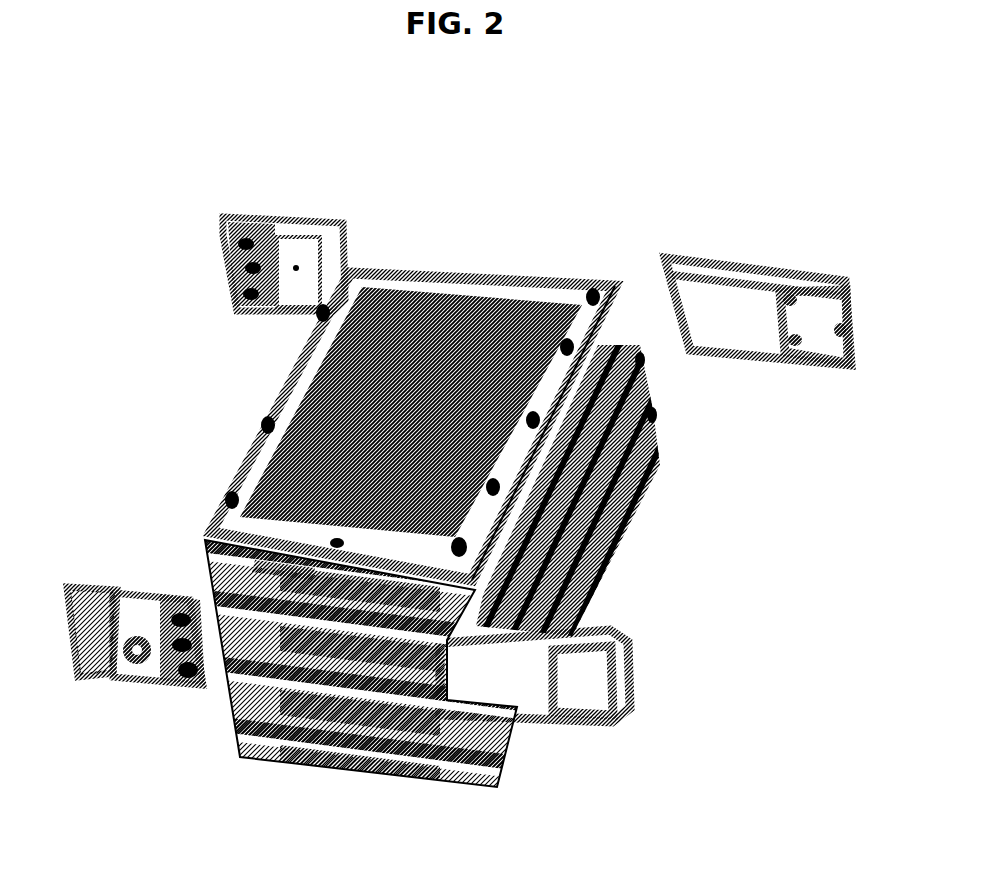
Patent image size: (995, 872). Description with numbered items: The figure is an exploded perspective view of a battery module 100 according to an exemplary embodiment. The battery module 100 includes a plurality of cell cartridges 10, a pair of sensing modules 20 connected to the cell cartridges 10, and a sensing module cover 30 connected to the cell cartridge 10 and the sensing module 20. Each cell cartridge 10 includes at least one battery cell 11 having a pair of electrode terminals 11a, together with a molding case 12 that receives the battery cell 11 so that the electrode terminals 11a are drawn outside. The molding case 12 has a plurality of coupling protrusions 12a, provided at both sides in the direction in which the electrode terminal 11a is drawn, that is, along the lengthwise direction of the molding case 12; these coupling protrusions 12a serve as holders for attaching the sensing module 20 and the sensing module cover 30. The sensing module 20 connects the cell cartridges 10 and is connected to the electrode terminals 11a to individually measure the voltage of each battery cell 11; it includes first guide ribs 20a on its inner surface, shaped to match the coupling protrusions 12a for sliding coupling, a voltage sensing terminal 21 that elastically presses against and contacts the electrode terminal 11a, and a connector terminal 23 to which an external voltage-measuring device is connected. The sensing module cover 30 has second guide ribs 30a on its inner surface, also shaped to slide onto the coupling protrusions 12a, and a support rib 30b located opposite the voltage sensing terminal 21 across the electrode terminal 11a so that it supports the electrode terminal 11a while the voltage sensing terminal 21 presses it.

The battery module 100 is at (530, 160).
The cell cartridge 10 is at (568, 268).
The battery cell 11 is at (297, 430).
The electrode terminal 11a is at (303, 573).
The molding case 12 is at (393, 268).
The coupling protrusion 12a is at (437, 594).
The sensing module 20 is at (257, 222).
The first guide rib 20a is at (255, 258).
The voltage sensing terminal 21 is at (200, 662).
The connector terminal 23 is at (125, 668).
The sensing module cover 30 is at (753, 267).
The second guide rib 30a is at (810, 360).
The support rib 30b is at (697, 312).